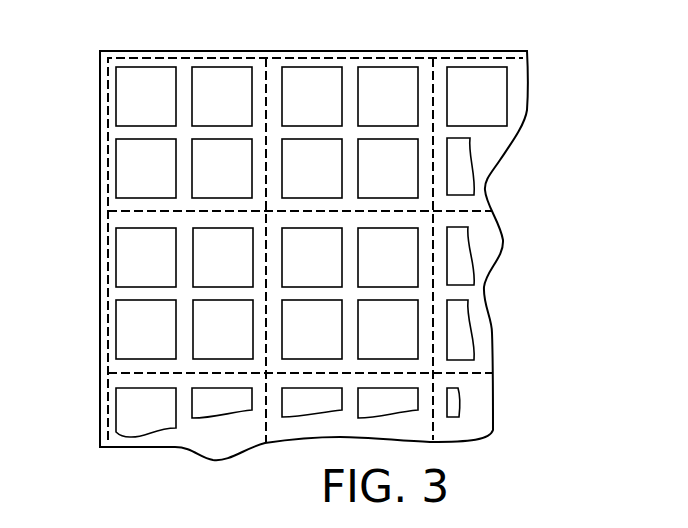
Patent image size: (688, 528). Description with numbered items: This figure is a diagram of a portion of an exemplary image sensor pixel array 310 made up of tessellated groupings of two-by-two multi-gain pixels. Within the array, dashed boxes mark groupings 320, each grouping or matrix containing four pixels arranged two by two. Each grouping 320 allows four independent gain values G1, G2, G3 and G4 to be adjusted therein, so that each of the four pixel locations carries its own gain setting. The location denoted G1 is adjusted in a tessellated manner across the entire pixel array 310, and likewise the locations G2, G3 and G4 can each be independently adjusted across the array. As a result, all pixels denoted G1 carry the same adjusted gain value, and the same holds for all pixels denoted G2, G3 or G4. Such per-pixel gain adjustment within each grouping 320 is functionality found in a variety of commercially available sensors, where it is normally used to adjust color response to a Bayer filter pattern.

The sensor pixel array 310 is at (547, 60).
The grouping of four pixels 320 is at (303, 250).
The first gain value G1 is at (311, 252).
The second gain value G2 is at (305, 177).
The third gain value G3 is at (229, 249).
The fourth gain value G4 is at (305, 249).